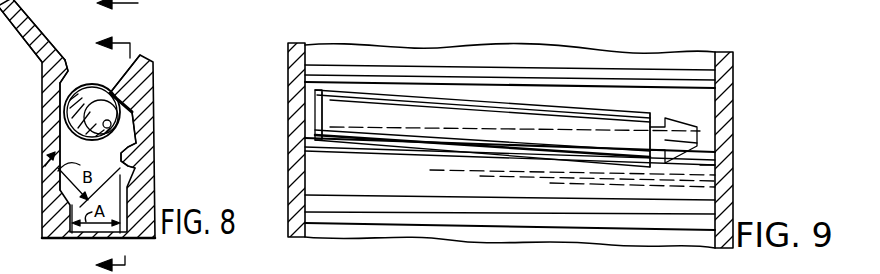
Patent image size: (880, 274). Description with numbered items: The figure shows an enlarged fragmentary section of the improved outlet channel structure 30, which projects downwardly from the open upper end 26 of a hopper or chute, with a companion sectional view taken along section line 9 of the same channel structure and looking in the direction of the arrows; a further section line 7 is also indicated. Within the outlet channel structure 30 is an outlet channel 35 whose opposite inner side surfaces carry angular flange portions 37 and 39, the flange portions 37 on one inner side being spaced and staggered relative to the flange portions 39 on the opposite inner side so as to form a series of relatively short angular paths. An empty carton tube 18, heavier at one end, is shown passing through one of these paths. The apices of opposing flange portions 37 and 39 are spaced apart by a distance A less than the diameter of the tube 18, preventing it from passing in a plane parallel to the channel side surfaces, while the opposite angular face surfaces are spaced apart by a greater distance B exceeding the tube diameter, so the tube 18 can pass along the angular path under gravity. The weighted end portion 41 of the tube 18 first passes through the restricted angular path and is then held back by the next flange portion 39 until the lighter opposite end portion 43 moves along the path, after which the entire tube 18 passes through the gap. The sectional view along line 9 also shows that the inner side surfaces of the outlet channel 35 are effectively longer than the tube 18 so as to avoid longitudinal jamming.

In FIG. 8, the section line 7 is at (124, 6).
In FIG. 8, the section line 9- 9 is at (121, 152).
In FIG. 8, the carton tube 18 is at (112, 92).
In FIG. 9, the carton tube 18 is at (477, 112).
In FIG. 8, the open upper end 26 is at (46, 28).
In FIG. 8, the outlet channel structure 30 is at (155, 110).
In FIG. 9, the outlet channel structure 30 is at (287, 140).
In FIG. 8, the outlet channel 35 is at (118, 81).
In FIG. 9, the outlet channel 35 is at (693, 178).
In FIG. 8, the angular flange portion 37 is at (62, 133).
In FIG. 9, the angular flange portion 37 is at (706, 140).
In FIG. 8, the angular flange portion 39 is at (153, 98).
In FIG. 8, the weighted end portion 41 is at (134, 144).
In FIG. 9, the weighted end portion 41 is at (630, 117).
In FIG. 8, the opposite end portion 43 is at (64, 84).
In FIG. 9, the opposite end portion 43 is at (322, 103).